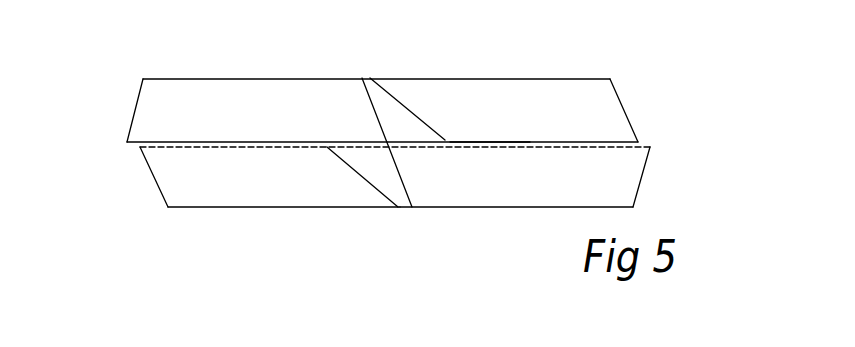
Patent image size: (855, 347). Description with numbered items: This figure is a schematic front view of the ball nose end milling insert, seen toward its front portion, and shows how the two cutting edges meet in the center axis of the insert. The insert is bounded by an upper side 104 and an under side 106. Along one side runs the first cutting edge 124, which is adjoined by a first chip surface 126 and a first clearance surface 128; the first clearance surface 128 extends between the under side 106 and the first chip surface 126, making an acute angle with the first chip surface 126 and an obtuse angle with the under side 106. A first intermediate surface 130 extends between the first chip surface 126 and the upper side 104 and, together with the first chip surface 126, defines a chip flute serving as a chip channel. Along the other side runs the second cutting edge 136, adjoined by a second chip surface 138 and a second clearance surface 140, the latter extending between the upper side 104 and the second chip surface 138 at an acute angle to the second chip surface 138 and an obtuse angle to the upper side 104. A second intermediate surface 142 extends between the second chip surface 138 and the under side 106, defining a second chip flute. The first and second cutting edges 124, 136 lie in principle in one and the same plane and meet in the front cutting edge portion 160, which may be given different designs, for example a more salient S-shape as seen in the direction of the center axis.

The upper side 104 is at (513, 207).
The under side 106 is at (268, 78).
The first cutting edge 124 is at (167, 148).
The first chip surface 126 is at (288, 145).
The first clearance surface 128 is at (196, 103).
The first intermediate surface 130 is at (224, 190).
The second cutting edge 136 is at (602, 143).
The second chip surface 138 is at (490, 141).
The second clearance surface 140 is at (618, 173).
The second intermediate surface 142 is at (543, 98).
The front cutting edge portion 160 is at (385, 139).